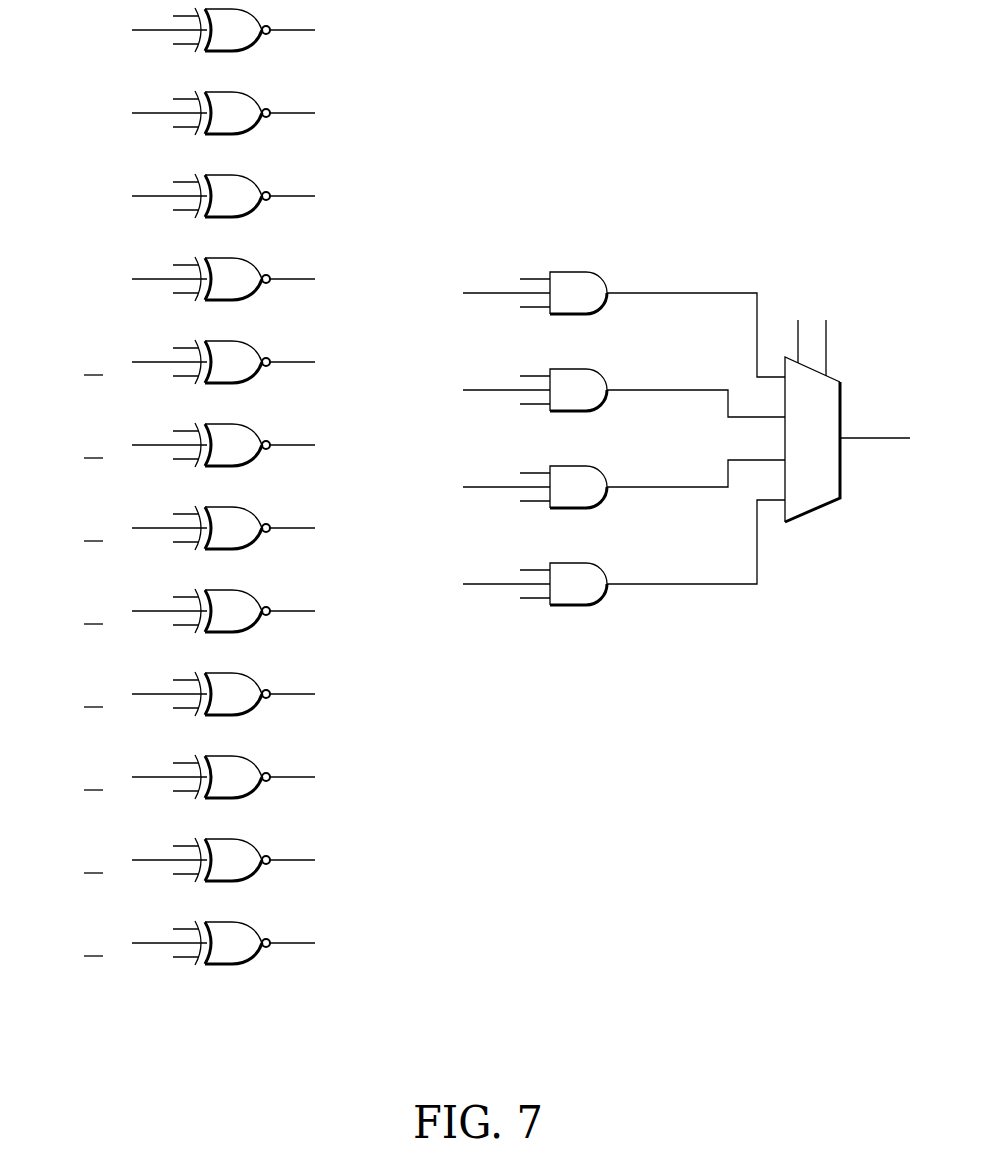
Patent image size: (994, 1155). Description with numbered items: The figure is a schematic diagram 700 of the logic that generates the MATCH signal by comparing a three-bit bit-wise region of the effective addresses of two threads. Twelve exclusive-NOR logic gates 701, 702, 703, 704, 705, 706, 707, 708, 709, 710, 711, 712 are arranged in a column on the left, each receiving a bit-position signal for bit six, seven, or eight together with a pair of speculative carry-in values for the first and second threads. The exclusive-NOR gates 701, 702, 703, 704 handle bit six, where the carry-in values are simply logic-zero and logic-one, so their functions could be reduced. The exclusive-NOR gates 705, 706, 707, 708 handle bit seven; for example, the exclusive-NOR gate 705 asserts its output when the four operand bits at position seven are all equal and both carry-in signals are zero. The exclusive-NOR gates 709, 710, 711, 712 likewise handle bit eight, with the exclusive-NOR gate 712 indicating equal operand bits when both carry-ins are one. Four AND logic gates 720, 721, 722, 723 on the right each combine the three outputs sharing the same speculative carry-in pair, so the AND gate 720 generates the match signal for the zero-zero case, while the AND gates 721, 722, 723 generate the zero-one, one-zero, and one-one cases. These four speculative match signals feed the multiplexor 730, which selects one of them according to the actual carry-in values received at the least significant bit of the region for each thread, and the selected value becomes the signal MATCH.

The schematic diagram 700 is at (496, 1067).
The exclusive-NOR logic gate 701 is at (246, 38).
The exclusive-NOR logic gate 702 is at (246, 121).
The exclusive-NOR logic gate 703 is at (246, 204).
The exclusive-NOR logic gate 704 is at (246, 287).
The exclusive-NOR logic gate 705 is at (208, 370).
The exclusive-NOR logic gate 706 is at (208, 453).
The exclusive-NOR logic gate 707 is at (208, 536).
The exclusive-NOR logic gate 708 is at (208, 619).
The exclusive-NOR logic gate 709 is at (208, 702).
The exclusive-NOR logic gate 710 is at (208, 785).
The exclusive-NOR logic gate 711 is at (208, 868).
The exclusive-NOR logic gate 712 is at (208, 951).
The AND logic gate 720 is at (594, 319).
The AND logic gate 721 is at (594, 399).
The AND logic gate 722 is at (594, 496).
The AND logic gate 723 is at (594, 567).
The multiplexor 730 is at (828, 467).